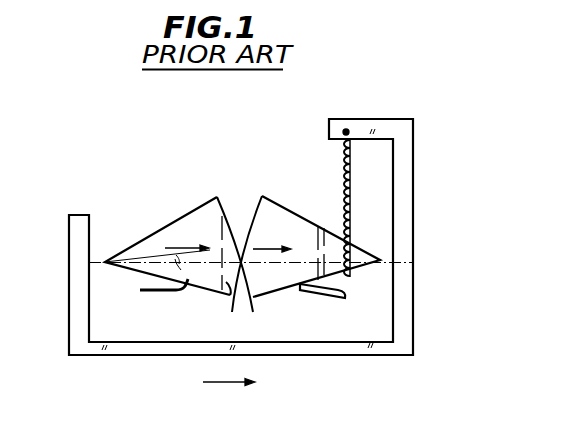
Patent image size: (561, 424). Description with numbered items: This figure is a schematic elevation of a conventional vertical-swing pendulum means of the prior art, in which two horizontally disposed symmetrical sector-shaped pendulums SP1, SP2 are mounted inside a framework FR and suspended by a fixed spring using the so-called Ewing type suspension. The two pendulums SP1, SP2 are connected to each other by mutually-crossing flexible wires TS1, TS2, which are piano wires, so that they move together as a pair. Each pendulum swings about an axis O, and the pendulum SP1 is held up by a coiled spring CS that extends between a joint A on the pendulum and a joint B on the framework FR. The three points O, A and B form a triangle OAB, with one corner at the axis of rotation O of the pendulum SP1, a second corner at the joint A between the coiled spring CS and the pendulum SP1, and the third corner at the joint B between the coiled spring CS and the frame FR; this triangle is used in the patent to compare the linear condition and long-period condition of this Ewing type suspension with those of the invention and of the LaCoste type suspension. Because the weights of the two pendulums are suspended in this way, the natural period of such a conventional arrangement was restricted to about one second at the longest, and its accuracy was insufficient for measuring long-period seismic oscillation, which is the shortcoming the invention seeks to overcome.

The framework FR is at (385, 353).
The axis about which the pendulum swings O is at (105, 262).
The sector-shaped pendulum SP1 is at (300, 215).
The sector-shaped pendulum SP2 is at (182, 213).
The flexible wire TS1 is at (253, 307).
The flexible wire TS2 is at (232, 308).
The joint between the pendulum and the coiled spring A is at (346, 292).
The joint between the coiled spring and the frame B is at (346, 131).
The coiled spring CS is at (341, 160).
The displacement direction x'' x is at (240, 385).